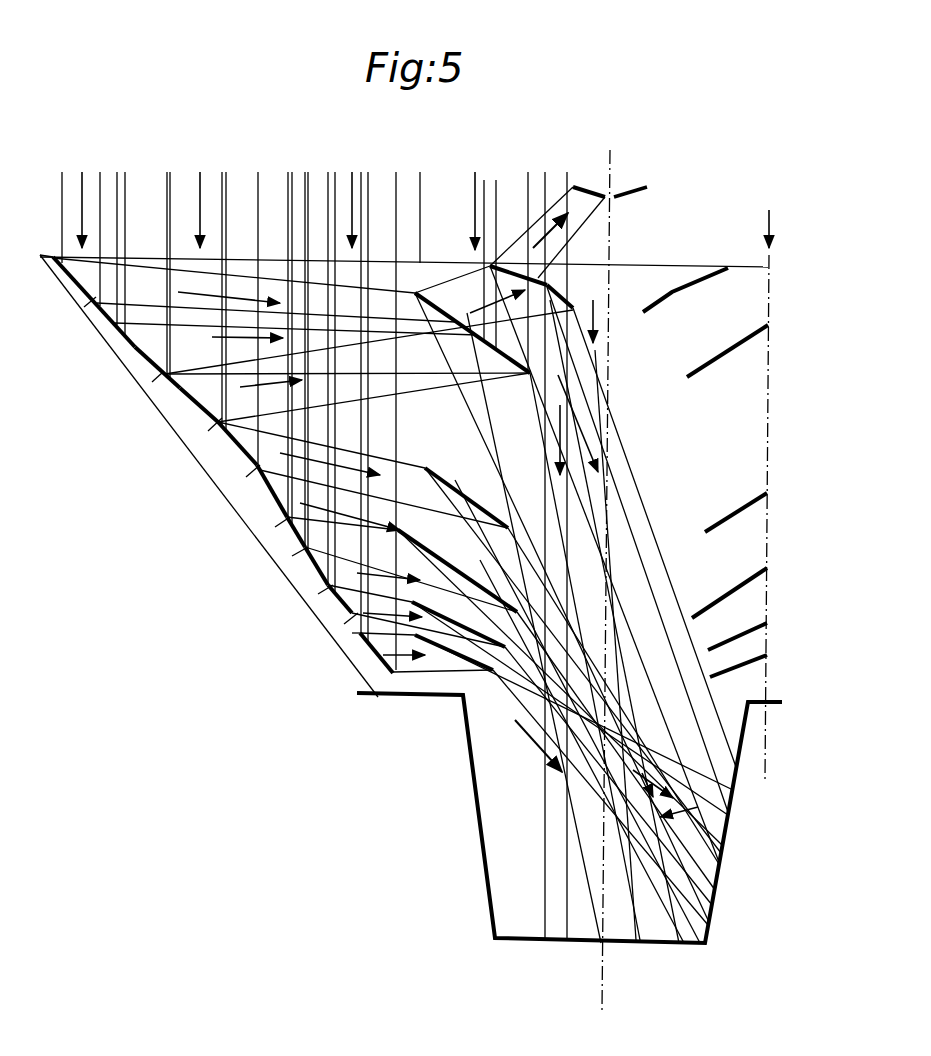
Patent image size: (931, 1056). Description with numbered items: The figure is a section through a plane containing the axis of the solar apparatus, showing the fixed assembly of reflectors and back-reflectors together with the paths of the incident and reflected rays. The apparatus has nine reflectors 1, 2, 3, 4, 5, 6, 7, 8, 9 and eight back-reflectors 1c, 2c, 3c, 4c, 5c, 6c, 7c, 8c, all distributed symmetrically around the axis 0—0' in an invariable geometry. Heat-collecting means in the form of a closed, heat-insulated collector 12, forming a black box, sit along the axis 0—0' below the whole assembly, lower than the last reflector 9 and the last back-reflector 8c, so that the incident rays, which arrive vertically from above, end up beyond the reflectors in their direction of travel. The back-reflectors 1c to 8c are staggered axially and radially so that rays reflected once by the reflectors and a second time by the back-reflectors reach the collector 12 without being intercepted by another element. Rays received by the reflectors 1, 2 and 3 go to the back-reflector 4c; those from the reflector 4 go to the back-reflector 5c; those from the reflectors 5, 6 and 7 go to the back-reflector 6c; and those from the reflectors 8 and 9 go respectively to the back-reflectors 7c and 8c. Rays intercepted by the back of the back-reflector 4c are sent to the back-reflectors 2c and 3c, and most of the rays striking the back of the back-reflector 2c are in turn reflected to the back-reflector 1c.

The reflector 1 is at (78, 285).
The reflector 2 is at (135, 347).
The reflector 3 is at (188, 400).
The reflector 4 is at (230, 443).
The reflector 5 is at (263, 497).
The reflector 6 is at (290, 537).
The reflector 7 is at (315, 572).
The reflector 8 is at (342, 603).
The reflector 9 is at (370, 650).
The back-reflector 1c is at (588, 187).
The back-reflector 2c is at (537, 281).
The back-reflector 3c is at (558, 297).
The back-reflector 4c is at (453, 314).
The back-reflector 5c is at (466, 494).
The back-reflector 6c is at (448, 565).
The back-reflector 7c is at (462, 630).
The back-reflector 8c is at (484, 670).
The collector 12 is at (473, 797).
The axis 0 is at (685, 576).
The axis 0' is at (613, 992).